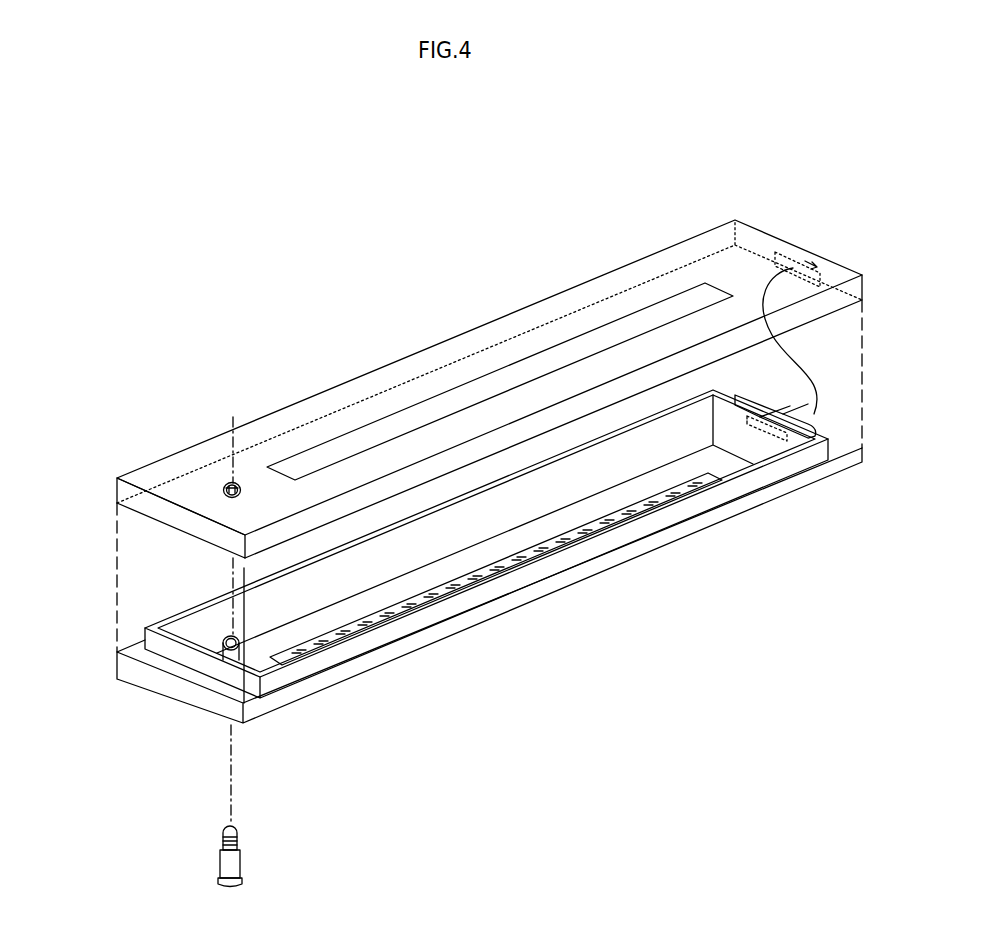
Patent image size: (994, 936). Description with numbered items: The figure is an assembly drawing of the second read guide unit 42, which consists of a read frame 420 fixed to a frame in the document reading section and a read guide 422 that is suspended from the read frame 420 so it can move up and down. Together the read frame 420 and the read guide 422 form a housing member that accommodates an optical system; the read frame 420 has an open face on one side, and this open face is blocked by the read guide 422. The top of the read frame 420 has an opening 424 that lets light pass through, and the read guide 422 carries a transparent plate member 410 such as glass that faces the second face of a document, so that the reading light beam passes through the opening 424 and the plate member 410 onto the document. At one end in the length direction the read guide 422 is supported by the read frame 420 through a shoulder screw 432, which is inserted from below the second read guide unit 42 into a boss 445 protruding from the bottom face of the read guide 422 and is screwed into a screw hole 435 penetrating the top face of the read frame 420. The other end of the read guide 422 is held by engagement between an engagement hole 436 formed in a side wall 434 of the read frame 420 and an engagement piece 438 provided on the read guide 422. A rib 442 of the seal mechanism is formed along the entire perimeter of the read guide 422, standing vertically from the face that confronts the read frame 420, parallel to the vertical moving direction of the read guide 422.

The second read guide unit 42 is at (268, 346).
The read frame 420 is at (176, 412).
The read guide 422 is at (102, 686).
The opening 424 is at (483, 384).
The shoulder screw 432 is at (220, 866).
The side wall 434 is at (866, 286).
The screw hole 435 is at (226, 488).
The engagement hole 436 is at (760, 258).
The engagement piece 438 is at (815, 418).
The rib 442 is at (185, 669).
The boss 445 is at (226, 637).
The plate member 410 is at (587, 545).